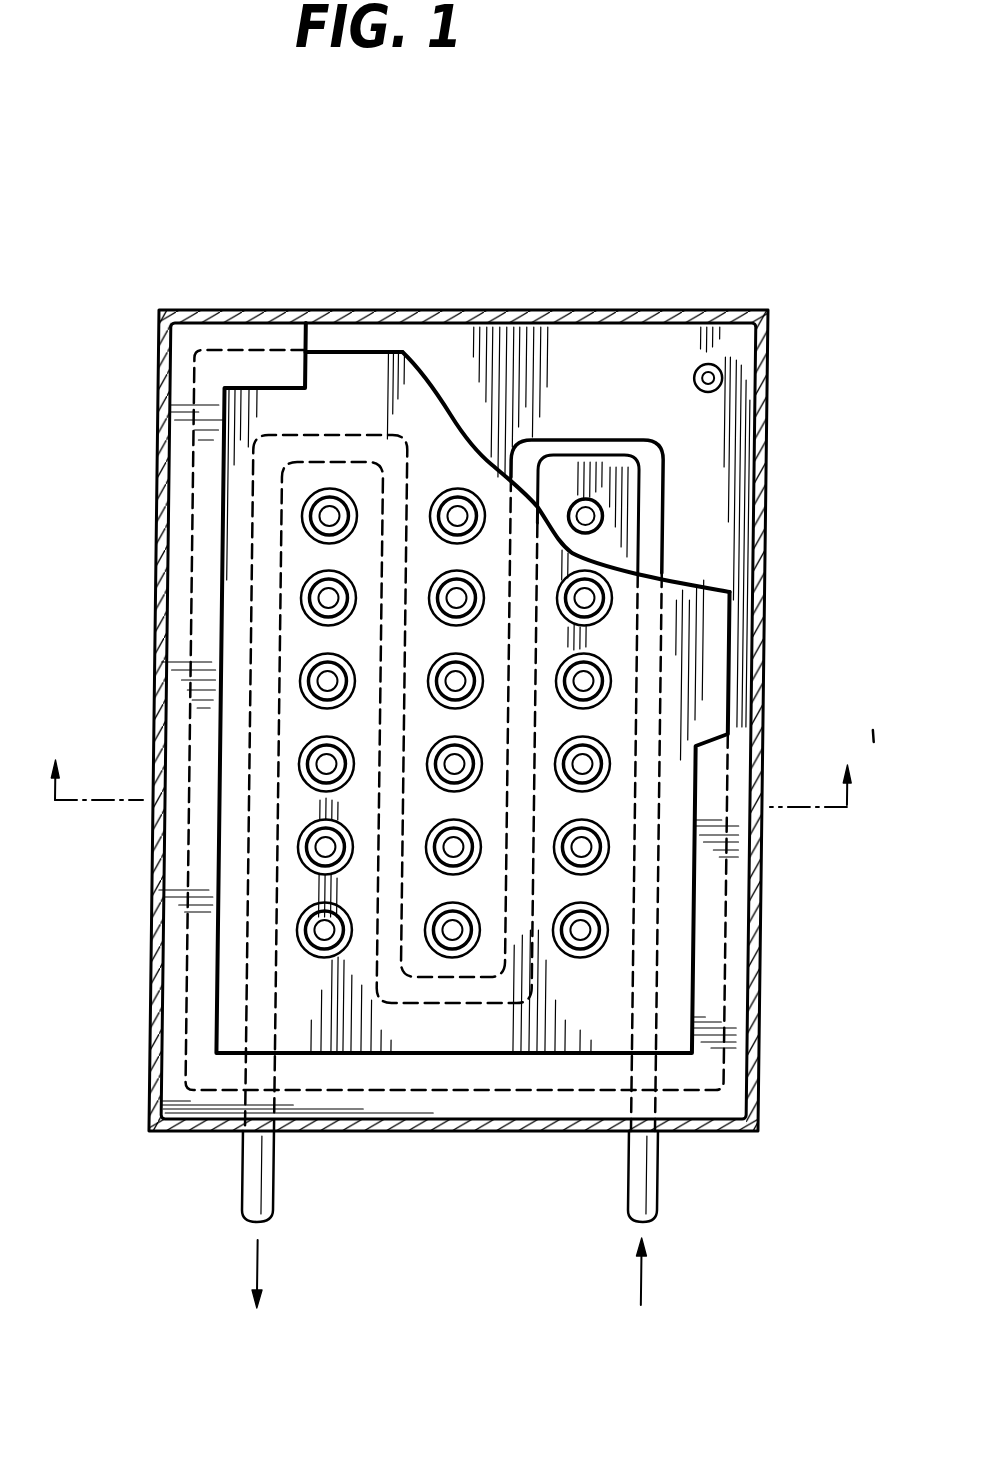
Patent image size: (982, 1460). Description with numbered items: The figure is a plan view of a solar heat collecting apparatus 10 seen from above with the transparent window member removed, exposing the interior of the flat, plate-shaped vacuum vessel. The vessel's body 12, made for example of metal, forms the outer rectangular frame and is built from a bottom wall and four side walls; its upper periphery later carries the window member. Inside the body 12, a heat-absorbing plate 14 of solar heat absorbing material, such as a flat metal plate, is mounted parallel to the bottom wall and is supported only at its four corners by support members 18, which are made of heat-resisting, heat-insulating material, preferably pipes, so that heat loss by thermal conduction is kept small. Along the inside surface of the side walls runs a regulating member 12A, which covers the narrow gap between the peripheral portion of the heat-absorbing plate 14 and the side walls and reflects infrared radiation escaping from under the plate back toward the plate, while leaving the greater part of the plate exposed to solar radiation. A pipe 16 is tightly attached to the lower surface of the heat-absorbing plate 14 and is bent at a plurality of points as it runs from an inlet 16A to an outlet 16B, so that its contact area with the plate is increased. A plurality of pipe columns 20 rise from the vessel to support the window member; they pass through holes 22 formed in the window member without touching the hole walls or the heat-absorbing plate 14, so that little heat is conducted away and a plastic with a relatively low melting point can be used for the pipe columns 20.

The solar heat collecting apparatus 10 is at (538, 258).
The body 12 is at (650, 313).
The regulating member 12A is at (743, 984).
The heat-absorbing plate 14 is at (378, 348).
The pipe 16 is at (667, 443).
The inlet 16A is at (668, 1178).
The outlet 16B is at (253, 1172).
The support member 18 is at (723, 372).
The pipe column 20 is at (310, 503).
The hole 22 is at (314, 536).